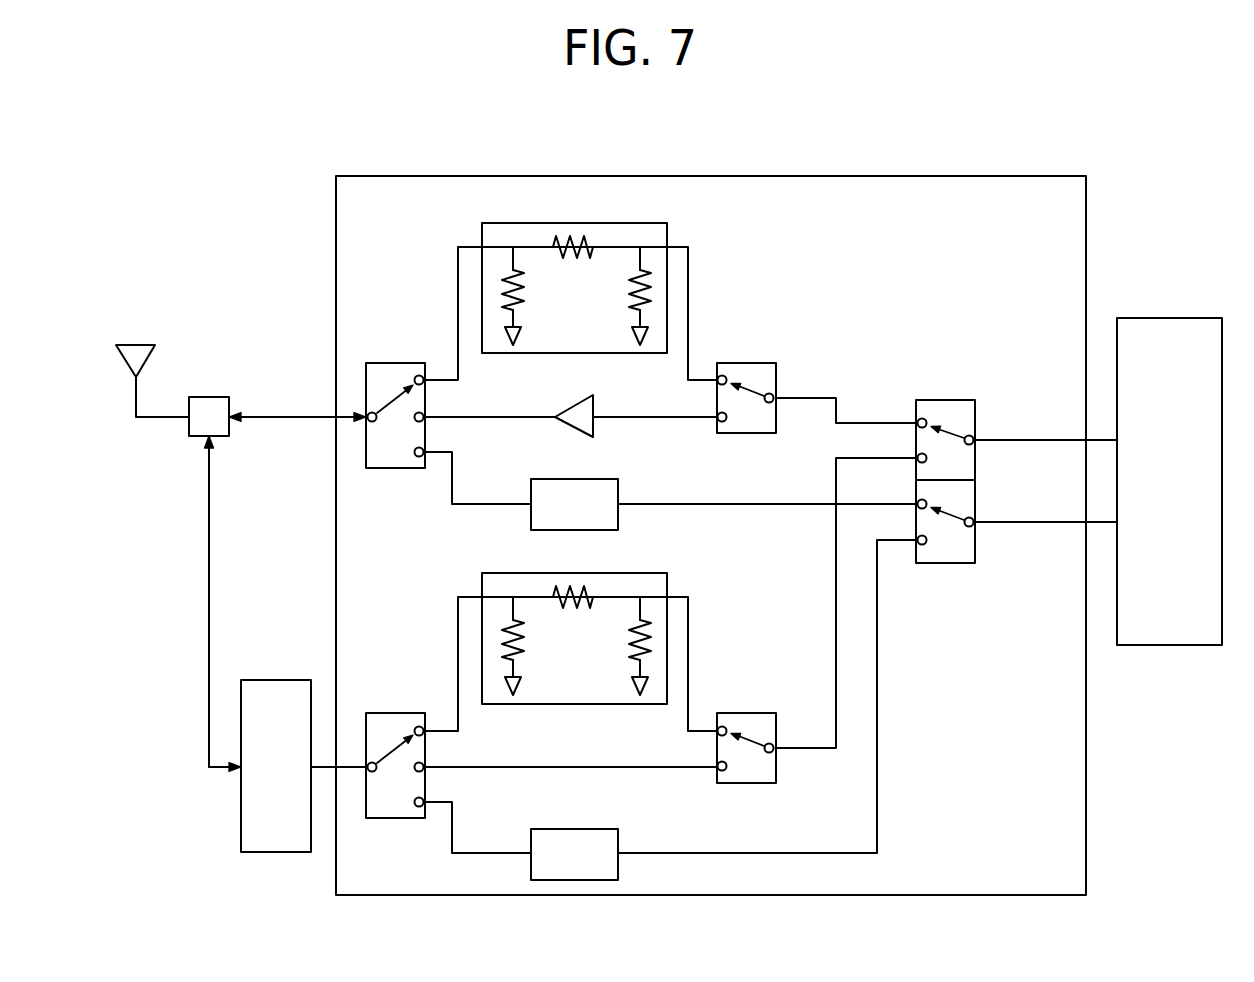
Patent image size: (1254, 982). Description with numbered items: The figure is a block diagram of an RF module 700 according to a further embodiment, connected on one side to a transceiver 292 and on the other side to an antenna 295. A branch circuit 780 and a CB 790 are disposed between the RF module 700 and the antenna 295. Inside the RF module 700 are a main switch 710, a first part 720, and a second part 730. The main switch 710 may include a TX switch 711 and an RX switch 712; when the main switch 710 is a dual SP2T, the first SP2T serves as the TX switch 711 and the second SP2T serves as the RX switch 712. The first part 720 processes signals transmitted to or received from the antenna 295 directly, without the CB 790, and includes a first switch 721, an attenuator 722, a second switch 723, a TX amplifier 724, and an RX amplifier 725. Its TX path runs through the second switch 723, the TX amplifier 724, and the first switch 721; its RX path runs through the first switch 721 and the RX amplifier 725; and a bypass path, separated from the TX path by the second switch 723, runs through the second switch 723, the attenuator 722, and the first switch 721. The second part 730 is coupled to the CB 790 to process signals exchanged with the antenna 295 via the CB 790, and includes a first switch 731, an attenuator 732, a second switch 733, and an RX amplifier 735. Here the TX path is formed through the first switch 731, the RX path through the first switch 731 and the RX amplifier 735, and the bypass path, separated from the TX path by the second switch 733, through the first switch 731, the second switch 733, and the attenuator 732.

The RF module 700 is at (907, 176).
The transceiver 292 is at (1168, 318).
The antenna 295 is at (136, 345).
The branch circuit 780 is at (209, 397).
The CB 790 is at (276, 680).
The main switch 710 is at (980, 390).
The TX switch 711 is at (975, 422).
The RX switch 712 is at (975, 545).
The first part 720 is at (431, 243).
The first switch 721 is at (395, 363).
The attenuator 722 is at (667, 232).
The second switch 723 is at (745, 363).
The TX amplifier 724 is at (572, 406).
The RX amplifier 725 is at (618, 490).
The second part 730 is at (431, 591).
The first switch 731 is at (395, 713).
The attenuator 732 is at (667, 582).
The second switch 733 is at (745, 713).
The RX amplifier 735 is at (618, 840).